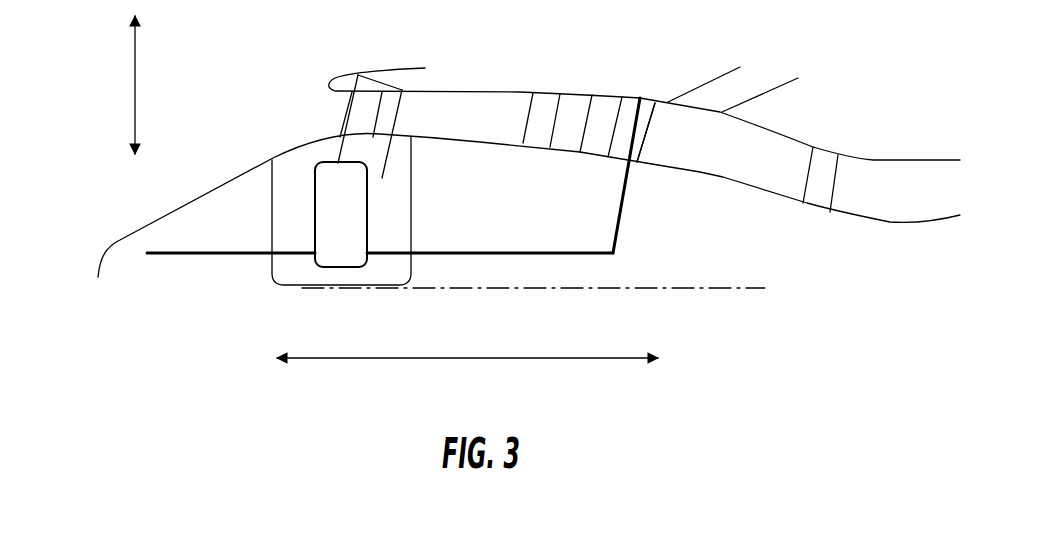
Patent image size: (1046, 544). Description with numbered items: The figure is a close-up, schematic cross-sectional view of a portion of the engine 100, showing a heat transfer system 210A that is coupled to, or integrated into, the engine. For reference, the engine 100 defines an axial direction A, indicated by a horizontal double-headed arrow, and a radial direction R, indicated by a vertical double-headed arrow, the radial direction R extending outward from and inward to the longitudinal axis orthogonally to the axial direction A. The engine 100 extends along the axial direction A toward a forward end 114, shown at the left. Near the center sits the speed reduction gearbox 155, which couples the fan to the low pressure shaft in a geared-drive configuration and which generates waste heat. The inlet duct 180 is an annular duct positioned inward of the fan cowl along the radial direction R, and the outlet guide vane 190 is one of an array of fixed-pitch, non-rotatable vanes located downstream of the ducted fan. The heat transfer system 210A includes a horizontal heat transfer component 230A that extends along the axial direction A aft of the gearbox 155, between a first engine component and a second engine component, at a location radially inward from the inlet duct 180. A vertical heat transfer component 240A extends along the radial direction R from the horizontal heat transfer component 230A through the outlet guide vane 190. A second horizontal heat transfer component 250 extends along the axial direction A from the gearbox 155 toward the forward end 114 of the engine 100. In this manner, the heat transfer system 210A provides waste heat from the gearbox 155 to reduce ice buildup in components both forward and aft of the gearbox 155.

The engine 100 is at (796, 114).
The forward end 114 is at (100, 263).
The speed reduction gearbox 155 is at (342, 267).
The inlet duct 180 is at (328, 111).
The outlet guide vane 190 is at (650, 128).
The heat transfer system 210A is at (539, 48).
The horizontal heat transfer component 230A is at (577, 253).
The vertical heat transfer component 240A is at (640, 185).
The second horizontal heat transfer component 250 is at (222, 257).
The radial direction R is at (135, 88).
The axial direction A is at (385, 358).